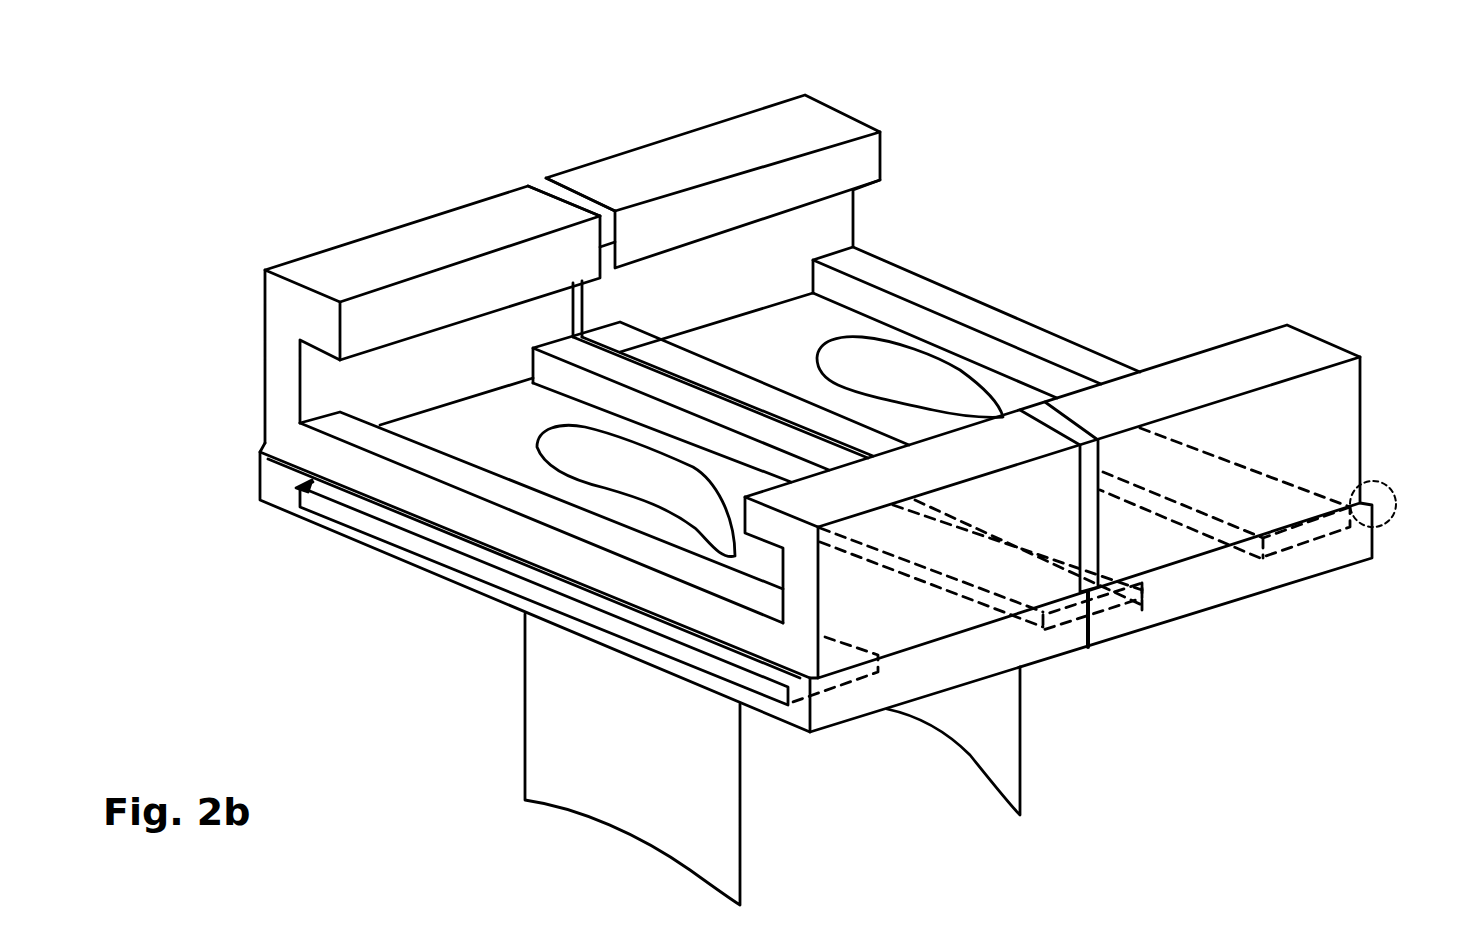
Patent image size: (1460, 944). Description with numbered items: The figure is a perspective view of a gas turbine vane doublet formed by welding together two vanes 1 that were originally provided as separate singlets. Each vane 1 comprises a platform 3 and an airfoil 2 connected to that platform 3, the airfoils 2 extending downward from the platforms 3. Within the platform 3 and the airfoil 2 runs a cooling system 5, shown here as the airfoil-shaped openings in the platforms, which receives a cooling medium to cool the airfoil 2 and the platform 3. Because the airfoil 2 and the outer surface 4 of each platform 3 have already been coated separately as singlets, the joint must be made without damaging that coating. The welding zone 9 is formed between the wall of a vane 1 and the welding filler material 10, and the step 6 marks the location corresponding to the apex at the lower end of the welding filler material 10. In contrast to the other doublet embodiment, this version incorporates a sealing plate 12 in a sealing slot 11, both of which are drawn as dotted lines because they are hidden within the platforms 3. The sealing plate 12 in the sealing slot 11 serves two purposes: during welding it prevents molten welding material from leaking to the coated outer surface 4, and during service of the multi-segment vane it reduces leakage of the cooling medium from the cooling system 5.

The gas turbine vane 1 is at (334, 159).
The airfoil 2 is at (968, 735).
The platform 3 is at (280, 476).
The outer surface 4 is at (346, 568).
The cooling system 5 is at (895, 348).
The step 6 is at (1381, 481).
The welding zone 9 is at (1063, 421).
The welding filler material 10 is at (545, 190).
The sealing slot 11 is at (1308, 530).
The sealing plate 12 is at (1068, 618).